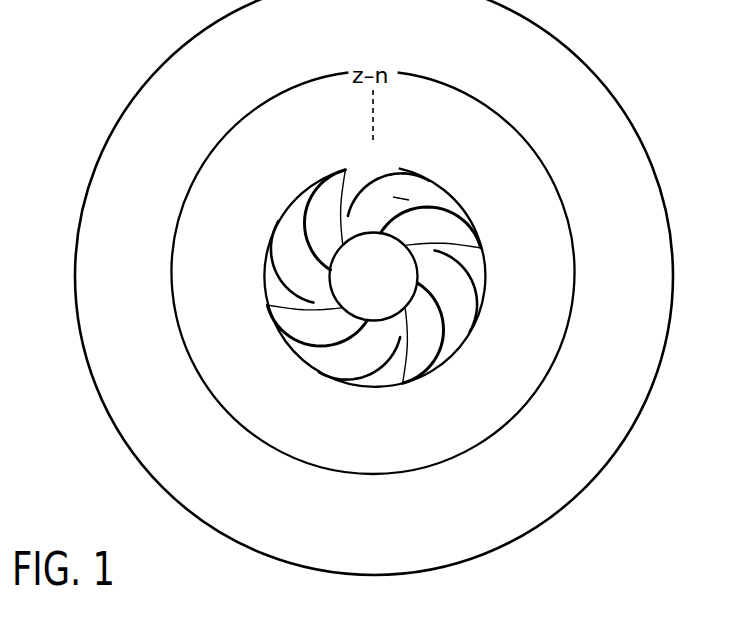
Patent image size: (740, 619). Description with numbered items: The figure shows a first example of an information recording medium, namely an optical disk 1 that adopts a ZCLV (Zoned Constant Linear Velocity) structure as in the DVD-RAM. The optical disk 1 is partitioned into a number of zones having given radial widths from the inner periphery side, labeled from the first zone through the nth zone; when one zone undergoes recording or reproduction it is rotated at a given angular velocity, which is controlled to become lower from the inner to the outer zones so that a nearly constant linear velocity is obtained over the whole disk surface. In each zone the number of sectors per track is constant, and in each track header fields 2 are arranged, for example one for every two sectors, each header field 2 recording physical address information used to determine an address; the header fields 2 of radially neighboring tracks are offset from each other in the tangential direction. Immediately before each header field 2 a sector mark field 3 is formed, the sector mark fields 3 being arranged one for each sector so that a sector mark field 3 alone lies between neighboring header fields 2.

The optical disk 1 is at (615, 99).
The header field 2 is at (470, 242).
The sector mark field 3 is at (445, 232).